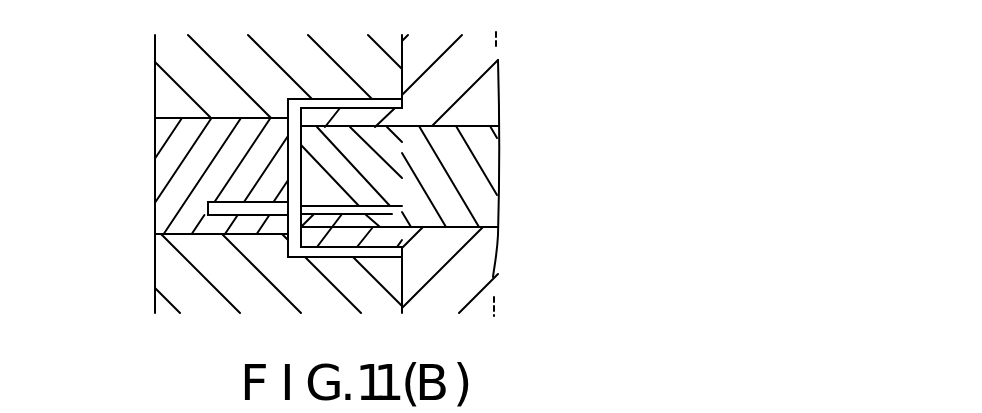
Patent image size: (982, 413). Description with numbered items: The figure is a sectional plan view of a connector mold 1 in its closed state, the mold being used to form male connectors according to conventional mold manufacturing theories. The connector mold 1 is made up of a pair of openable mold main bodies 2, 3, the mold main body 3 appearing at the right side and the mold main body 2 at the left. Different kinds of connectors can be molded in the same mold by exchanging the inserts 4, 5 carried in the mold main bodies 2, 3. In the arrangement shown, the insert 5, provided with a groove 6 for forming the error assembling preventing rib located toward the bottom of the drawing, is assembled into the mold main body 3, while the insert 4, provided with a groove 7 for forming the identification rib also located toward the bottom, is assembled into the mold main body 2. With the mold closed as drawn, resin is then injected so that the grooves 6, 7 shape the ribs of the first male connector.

The connector mold 1 is at (548, 97).
The mold main body 2 is at (168, 90).
The mold main body 3 is at (478, 62).
The insert 4 is at (167, 176).
The insert 5 is at (481, 182).
The groove 6 is at (393, 214).
The groove 7 is at (222, 208).